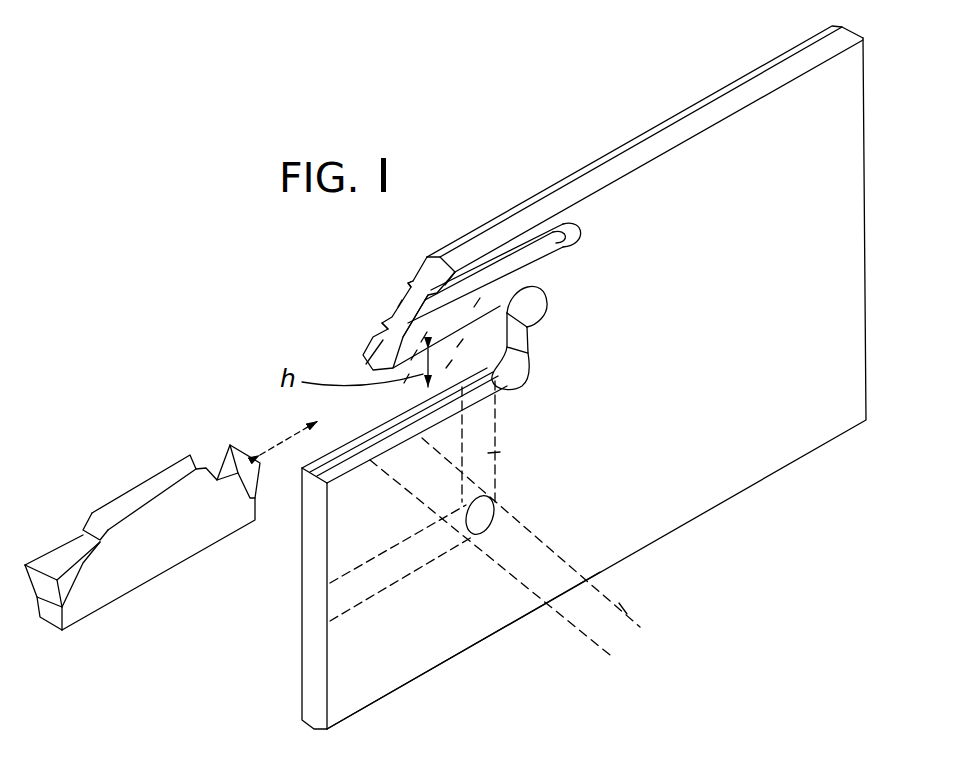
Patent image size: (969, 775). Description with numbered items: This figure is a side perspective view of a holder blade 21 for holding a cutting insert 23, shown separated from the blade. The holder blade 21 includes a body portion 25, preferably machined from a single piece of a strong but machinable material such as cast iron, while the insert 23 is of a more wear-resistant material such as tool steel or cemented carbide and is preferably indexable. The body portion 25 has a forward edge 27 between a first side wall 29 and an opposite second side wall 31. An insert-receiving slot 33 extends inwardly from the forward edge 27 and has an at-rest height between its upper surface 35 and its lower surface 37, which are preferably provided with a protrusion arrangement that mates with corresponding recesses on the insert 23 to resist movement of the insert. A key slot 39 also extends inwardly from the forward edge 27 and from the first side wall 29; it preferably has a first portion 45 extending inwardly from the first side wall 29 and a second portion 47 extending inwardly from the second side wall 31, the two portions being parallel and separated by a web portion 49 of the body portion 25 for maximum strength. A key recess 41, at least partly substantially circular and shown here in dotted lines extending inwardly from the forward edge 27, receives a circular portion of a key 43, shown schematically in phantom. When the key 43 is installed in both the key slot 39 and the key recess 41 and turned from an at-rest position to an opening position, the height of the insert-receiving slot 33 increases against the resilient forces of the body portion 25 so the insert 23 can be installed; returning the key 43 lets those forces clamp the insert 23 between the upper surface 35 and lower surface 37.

The holder blade 21 is at (594, 130).
The cutting insert 23 is at (135, 482).
The body portion 25 is at (867, 240).
The forward edge 27 is at (384, 330).
The first side wall 29 is at (413, 655).
The second side wall 31 is at (357, 637).
The insert-receiving slot 33 is at (472, 357).
The upper surface 35 is at (378, 368).
The lower surface 37 is at (357, 437).
The key slot 39 is at (521, 258).
The key recess 41 is at (497, 452).
The key 43 is at (625, 606).
The first portion 45 is at (558, 238).
The second portion 47 is at (409, 303).
The web portion 49 is at (405, 299).